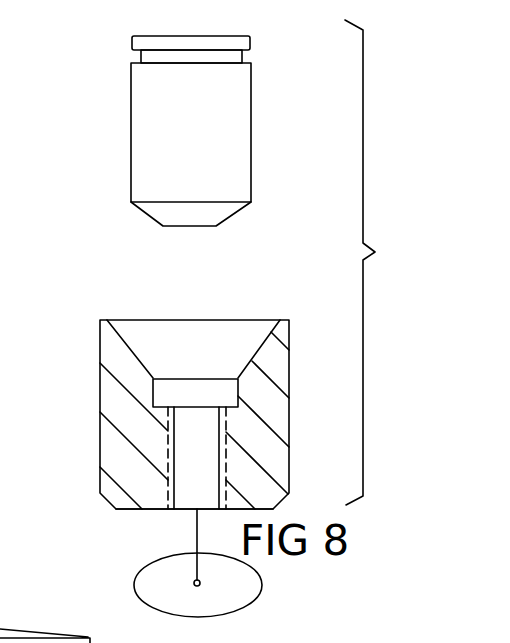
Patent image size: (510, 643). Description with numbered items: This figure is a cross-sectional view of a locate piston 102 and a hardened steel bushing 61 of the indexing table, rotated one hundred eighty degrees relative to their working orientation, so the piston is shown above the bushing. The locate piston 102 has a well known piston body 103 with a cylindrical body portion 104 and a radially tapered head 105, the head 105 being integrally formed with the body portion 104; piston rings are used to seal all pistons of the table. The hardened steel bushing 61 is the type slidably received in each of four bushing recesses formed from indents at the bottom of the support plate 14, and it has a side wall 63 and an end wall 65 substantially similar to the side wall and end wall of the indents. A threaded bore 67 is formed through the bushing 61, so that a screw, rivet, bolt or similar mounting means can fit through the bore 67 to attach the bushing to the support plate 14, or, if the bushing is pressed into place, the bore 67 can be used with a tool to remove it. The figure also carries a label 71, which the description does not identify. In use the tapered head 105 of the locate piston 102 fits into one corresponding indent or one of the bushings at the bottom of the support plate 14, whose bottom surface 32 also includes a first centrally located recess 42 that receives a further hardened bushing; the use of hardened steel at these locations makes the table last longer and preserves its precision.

The locate piston 102 is at (125, 127).
The piston body 103 is at (131, 43).
The cylindrical body portion 104 is at (131, 176).
The radially tapered head 105 is at (146, 217).
The hardened steel bushing 61 is at (189, 435).
The side wall 63 is at (126, 348).
The end wall 65 is at (177, 379).
The threaded bore 67 is at (176, 481).
The bottom surface of block 71 is at (233, 512).
The first centrally located recess 42 is at (194, 583).
The support plate 14 is at (262, 584).
The bottom surface 32 is at (227, 592).